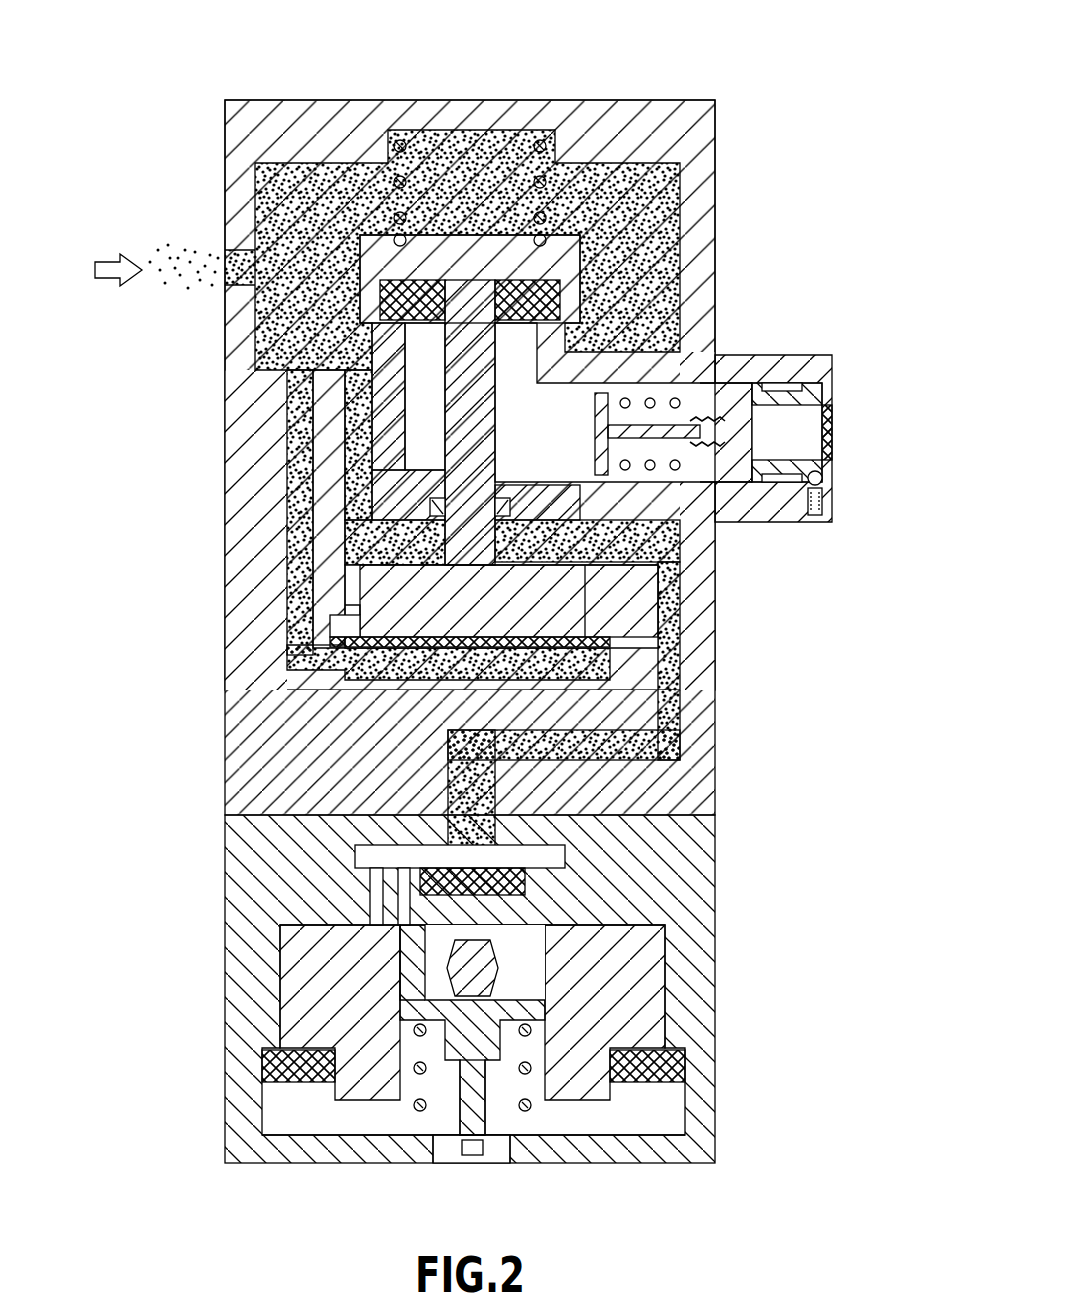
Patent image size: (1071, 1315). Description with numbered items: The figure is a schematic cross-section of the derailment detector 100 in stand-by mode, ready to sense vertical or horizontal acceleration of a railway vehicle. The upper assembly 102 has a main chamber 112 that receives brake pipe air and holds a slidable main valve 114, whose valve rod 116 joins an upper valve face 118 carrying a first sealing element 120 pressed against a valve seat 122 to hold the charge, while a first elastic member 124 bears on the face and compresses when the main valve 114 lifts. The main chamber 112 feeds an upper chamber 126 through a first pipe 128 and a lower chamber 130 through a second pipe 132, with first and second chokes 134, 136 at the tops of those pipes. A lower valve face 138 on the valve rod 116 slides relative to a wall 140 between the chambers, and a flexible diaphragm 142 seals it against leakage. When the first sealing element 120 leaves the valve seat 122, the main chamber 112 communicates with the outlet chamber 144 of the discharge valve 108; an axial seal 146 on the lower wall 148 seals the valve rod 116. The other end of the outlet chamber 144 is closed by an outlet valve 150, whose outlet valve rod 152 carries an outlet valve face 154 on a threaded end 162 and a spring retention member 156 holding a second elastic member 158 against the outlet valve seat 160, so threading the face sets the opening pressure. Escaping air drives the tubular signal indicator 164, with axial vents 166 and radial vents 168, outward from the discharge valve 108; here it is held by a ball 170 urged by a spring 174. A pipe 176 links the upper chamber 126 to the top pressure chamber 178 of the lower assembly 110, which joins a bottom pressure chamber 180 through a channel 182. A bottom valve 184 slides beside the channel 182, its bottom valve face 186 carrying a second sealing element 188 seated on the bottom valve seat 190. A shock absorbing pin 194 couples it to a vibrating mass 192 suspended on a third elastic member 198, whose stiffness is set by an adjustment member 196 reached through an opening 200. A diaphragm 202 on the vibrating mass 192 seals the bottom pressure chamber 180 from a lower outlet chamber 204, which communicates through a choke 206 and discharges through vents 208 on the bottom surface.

The derailment detector 100 is at (708, 35).
The upper assembly 102 is at (540, 100).
The discharge valve 108 is at (801, 445).
The lower assembly 110 is at (650, 1163).
The main chamber 112 is at (290, 190).
The main valve 114 is at (575, 245).
The valve rod 116 is at (480, 355).
The upper valve face 118 is at (455, 270).
The first sealing element 120 is at (262, 210).
The valve seat 122 is at (385, 340).
The first elastic member 124 is at (545, 165).
The upper chamber 126 is at (440, 505).
The first pipe 128 is at (290, 505).
The lower chamber 130 is at (320, 655).
The second pipe 132 is at (300, 475).
The first choke 134 is at (325, 392).
The second choke 136 is at (290, 380).
The lower valve face 138 is at (495, 605).
The wall 140 is at (605, 580).
The flexible diaphragm 142 is at (430, 650).
The outlet chamber 144 is at (575, 342).
The axial seal 146 is at (420, 550).
The lower wall 148 is at (700, 512).
The outlet valve 150 is at (701, 433).
The outlet valve rod 152 is at (700, 385).
The outlet valve face 154 is at (775, 475).
The spring retention member 156 is at (590, 420).
The second elastic member 158 is at (695, 500).
The outlet valve seat 160 is at (735, 407).
The threaded end 162 is at (730, 445).
The signal indicator 164 is at (832, 400).
The axial vents 166 is at (833, 450).
The radial vents 168 is at (825, 385).
The ball 170 is at (835, 480).
The spring 174 is at (840, 498).
The pipe 176 is at (545, 650).
The top pressure chamber 178 is at (370, 852).
The bottom pressure chamber 180 is at (315, 950).
The channel 182 is at (378, 912).
The bottom valve 184 is at (590, 938).
The bottom valve face 186 is at (440, 872).
The second sealing element 188 is at (550, 932).
The bottom valve seat 190 is at (480, 885).
The vibrating mass 192 is at (407, 1012).
The shock absorbing pin 194 is at (490, 962).
The adjustment member 196 is at (450, 1050).
The third elastic member 198 is at (530, 1100).
The opening 200 is at (470, 1168).
The diaphragm 202 is at (660, 1078).
The lower outlet chamber 204 is at (640, 1120).
The choke 206 is at (280, 1070).
The vents 208 is at (446, 1160).